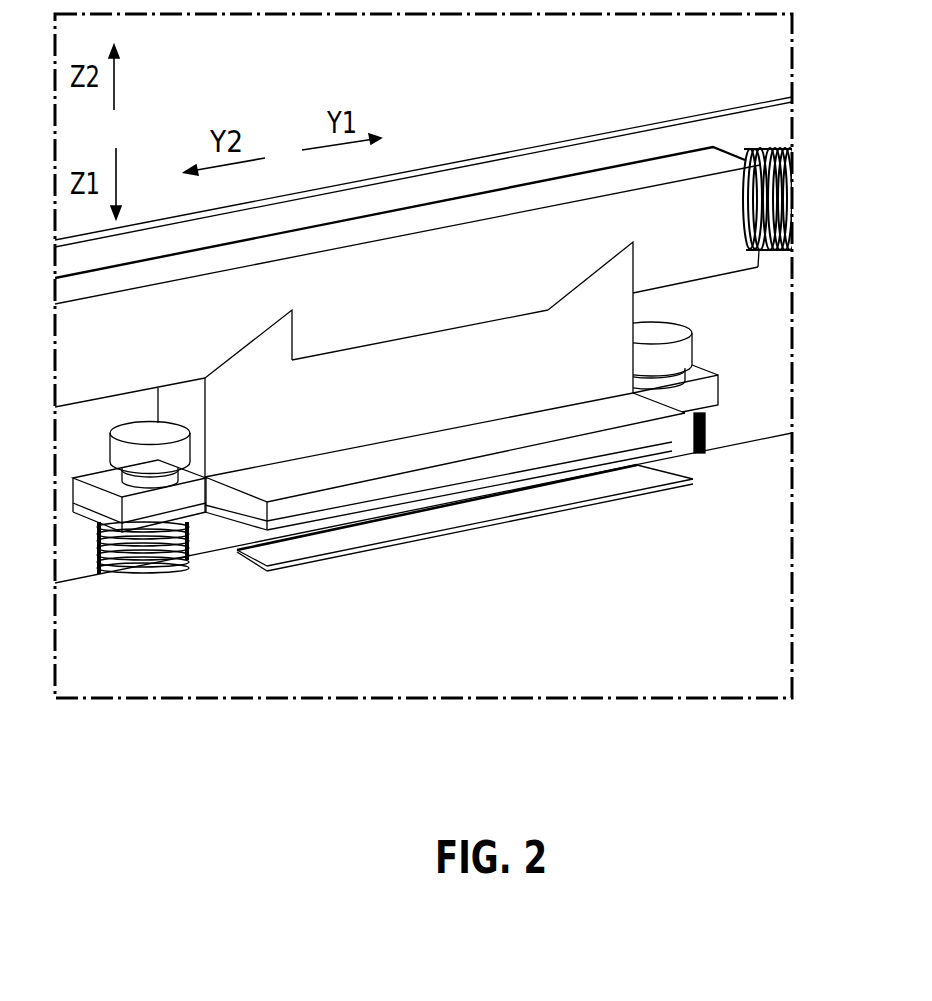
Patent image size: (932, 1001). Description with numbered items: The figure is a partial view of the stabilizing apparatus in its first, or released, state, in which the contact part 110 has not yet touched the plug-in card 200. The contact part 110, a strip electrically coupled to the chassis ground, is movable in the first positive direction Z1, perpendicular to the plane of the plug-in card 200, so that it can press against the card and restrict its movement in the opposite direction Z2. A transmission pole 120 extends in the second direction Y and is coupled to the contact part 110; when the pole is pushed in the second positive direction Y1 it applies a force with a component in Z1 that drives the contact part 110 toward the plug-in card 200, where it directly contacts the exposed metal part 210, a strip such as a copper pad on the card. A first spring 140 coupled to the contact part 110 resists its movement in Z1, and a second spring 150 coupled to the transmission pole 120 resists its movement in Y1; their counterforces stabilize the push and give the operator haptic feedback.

The contact part 110 is at (613, 308).
The transmission pole 120 is at (635, 178).
The first spring 140 is at (182, 558).
The second spring 150 is at (768, 147).
The plug-in card 200 is at (723, 575).
The exposed metal part 210 is at (425, 523).